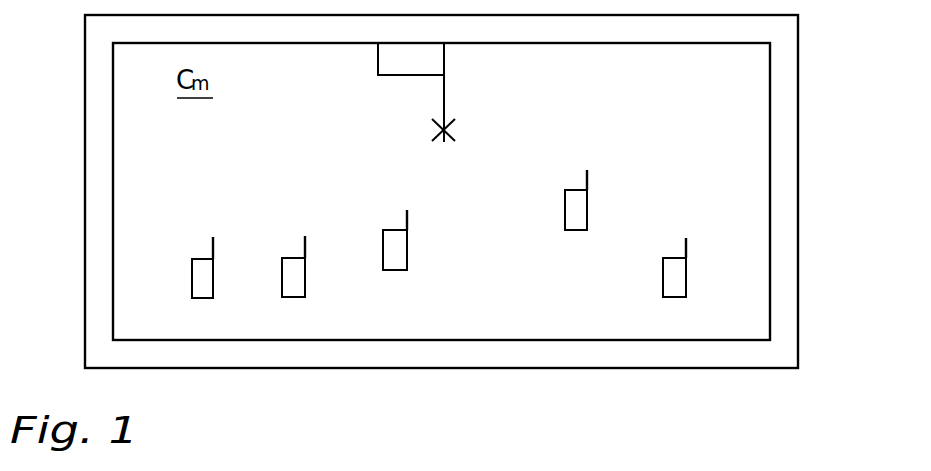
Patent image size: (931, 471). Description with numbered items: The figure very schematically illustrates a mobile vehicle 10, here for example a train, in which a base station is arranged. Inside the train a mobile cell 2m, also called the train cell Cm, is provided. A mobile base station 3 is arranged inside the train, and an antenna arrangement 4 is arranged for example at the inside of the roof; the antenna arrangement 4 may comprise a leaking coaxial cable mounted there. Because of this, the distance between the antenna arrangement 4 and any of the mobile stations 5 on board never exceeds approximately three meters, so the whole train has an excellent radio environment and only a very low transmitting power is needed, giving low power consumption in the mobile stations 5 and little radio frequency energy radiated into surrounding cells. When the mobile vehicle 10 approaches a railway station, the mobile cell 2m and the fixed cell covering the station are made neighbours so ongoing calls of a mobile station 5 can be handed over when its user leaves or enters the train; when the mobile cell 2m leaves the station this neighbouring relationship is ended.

The mobile vehicle 10 is at (85, 277).
The mobile cell 2m is at (771, 117).
The mobile base station 3 is at (378, 59).
The antenna arrangement 4 is at (445, 105).
The mobile stations 5 is at (213, 280).